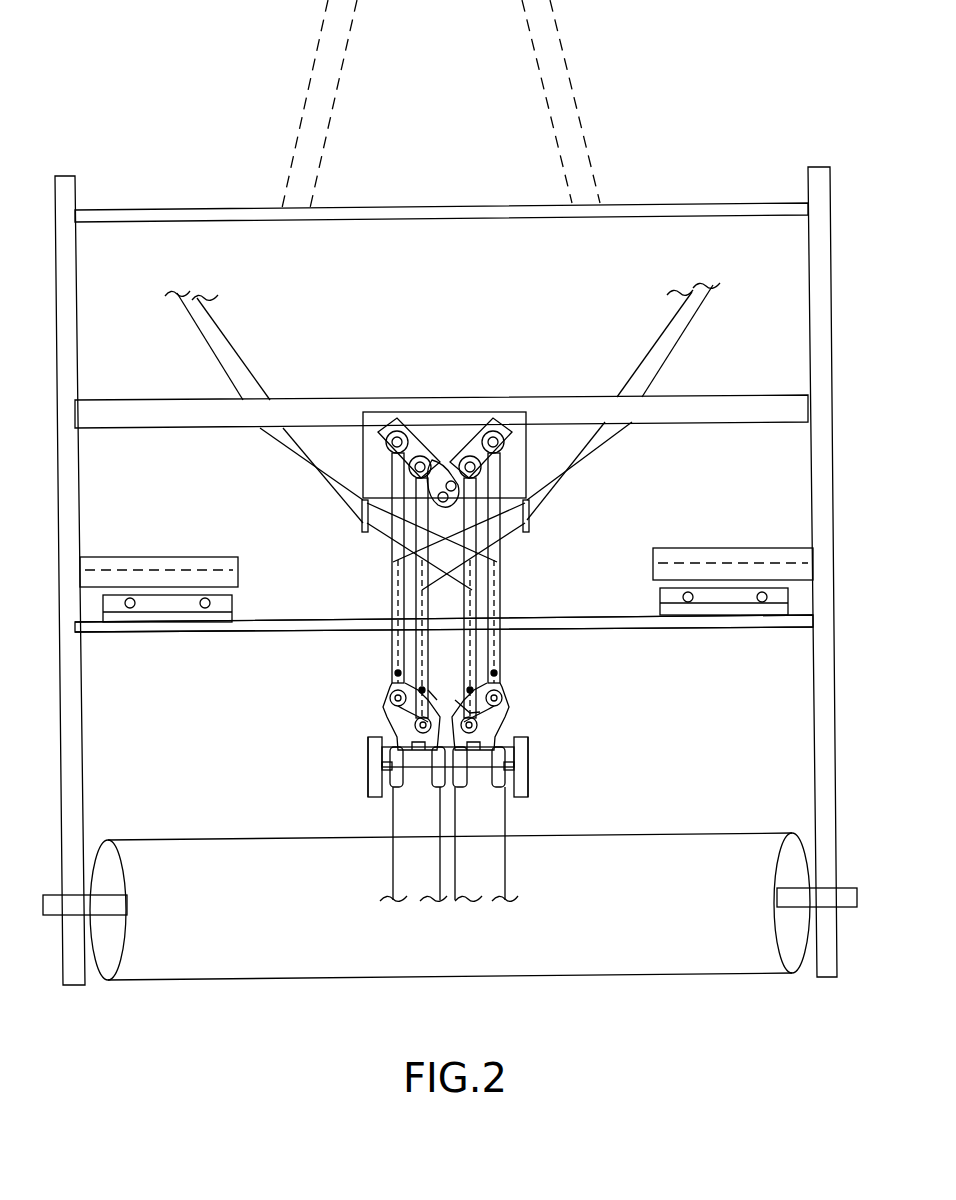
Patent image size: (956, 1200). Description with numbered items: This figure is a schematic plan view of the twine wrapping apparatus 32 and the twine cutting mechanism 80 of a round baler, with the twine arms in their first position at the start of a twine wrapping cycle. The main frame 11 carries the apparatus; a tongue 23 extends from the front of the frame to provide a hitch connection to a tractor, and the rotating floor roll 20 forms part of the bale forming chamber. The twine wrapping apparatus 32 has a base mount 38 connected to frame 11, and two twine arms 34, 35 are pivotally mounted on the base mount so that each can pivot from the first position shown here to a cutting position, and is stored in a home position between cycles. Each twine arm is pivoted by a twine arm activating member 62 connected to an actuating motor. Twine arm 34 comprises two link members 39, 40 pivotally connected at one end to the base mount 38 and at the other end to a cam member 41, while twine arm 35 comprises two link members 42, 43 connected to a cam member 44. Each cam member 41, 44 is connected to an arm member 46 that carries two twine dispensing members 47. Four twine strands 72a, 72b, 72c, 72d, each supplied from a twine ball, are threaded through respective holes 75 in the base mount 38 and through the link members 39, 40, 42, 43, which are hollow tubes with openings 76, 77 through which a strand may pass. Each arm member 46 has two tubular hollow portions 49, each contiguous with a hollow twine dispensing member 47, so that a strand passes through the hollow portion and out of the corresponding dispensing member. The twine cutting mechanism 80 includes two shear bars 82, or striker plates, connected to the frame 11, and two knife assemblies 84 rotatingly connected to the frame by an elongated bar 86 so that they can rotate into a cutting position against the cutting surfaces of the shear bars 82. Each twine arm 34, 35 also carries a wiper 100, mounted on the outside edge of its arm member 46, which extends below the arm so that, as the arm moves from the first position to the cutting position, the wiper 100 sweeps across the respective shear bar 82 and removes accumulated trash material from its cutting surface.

The main frame 11 is at (331, 400).
The floor roll 20 is at (715, 960).
The tongue 23 is at (330, 85).
The twine wrapping apparatus 32 is at (668, 752).
The twine arm 34 is at (372, 565).
The twine arm 35 is at (520, 563).
The base mount 38 is at (443, 420).
The link member 39 is at (392, 650).
The link member 40 is at (437, 670).
The cam member 41 is at (385, 705).
The link member 42 is at (480, 712).
The link member 43 is at (500, 645).
The cam member 44 is at (520, 700).
The arm member 46 is at (368, 772).
The twine dispensing member 47 is at (385, 804).
The tubular hollow portion 49 is at (368, 750).
The twine arm activating member 62 is at (400, 430).
The twine strand 72a is at (660, 317).
The twine strand 72b is at (687, 317).
The twine strand 72c is at (222, 360).
The twine strand 72d is at (222, 322).
The hole 75 is at (362, 500).
The opening 76 is at (395, 565).
The opening 77 is at (395, 674).
The twine cutting mechanism 80 is at (246, 648).
The shear bar 82 is at (125, 560).
The knife assembly 84 is at (250, 600).
The elongated bar 86 is at (745, 630).
The wiper 100 is at (370, 785).